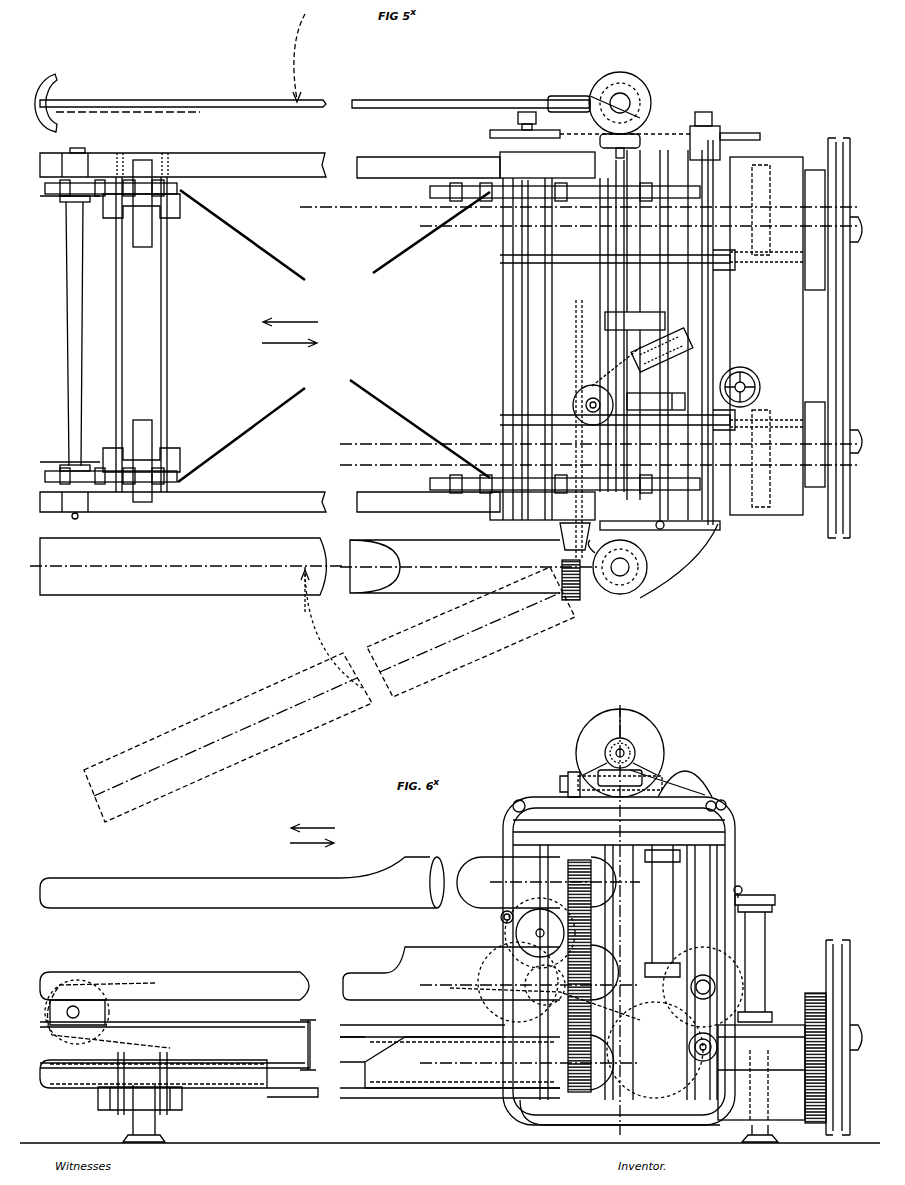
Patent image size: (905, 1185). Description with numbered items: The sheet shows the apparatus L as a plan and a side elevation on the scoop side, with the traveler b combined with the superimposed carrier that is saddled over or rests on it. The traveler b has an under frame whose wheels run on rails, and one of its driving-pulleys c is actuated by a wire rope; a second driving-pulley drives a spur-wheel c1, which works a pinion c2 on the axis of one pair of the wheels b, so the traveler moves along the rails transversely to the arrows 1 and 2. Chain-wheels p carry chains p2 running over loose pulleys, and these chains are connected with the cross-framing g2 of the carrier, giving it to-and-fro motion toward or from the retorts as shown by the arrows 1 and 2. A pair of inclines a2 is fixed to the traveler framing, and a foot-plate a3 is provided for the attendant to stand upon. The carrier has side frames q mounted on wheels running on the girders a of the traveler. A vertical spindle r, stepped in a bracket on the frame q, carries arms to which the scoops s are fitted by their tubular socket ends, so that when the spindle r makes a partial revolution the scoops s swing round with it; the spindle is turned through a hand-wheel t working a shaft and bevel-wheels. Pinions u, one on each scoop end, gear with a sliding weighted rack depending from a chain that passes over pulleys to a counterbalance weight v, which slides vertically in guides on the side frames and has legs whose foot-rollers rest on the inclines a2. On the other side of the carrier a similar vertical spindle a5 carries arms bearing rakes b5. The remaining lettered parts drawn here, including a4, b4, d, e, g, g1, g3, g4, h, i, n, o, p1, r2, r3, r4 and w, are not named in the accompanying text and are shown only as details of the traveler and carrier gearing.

In FIG. 5x, the girders a is at (346, 333).
In FIG. 6x, the girders a is at (422, 1070).
In FIG. 5x, the inclines a2 is at (584, 335).
In FIG. 5x, the foot-plate a3 is at (651, 336).
In FIG. 5x, the arm a4 is at (357, 174).
In FIG. 6x, the arm a4 is at (671, 783).
In FIG. 5x, the vertical spindle a5 is at (627, 136).
In FIG. 5x, the traveler b is at (415, 333).
In FIG. 6x, the traveler b is at (140, 1093).
In FIG. 5x, the rod b4 is at (128, 114).
In FIG. 5x, the rakes b5 is at (46, 103).
In FIG. 5x, the driving-pulley c is at (839, 338).
In FIG. 6x, the driving-pulley c is at (815, 1058).
In FIG. 5x, the spur-wheel c1 is at (859, 335).
In FIG. 5x, the pinion c2 is at (853, 384).
In FIG. 6x, the pinion c2 is at (844, 1037).
In FIG. 5x, the bearing d is at (815, 230).
In FIG. 5x, the bearing block e is at (814, 312).
In FIG. 6x, the frame g is at (619, 961).
In FIG. 5x, the wheel g1 is at (627, 115).
In FIG. 5x, the cross-framing g2 is at (565, 338).
In FIG. 6x, the cross-framing g2 is at (545, 960).
In FIG. 5x, the bracket g3 is at (586, 336).
In FIG. 5x, the lower wheel g4 is at (654, 559).
In FIG. 5x, the cam h is at (664, 350).
In FIG. 5x, the hand wheel i is at (740, 384).
In FIG. 5x, the block n is at (678, 401).
In FIG. 5x, the block o is at (656, 401).
In FIG. 6x, the chain-wheels p is at (107, 1014).
In FIG. 5x, the chain bar p1 is at (102, 333).
In FIG. 5x, the chains p2 is at (69, 333).
In FIG. 6x, the chains p2 is at (147, 976).
In FIG. 6x, the side frame q is at (675, 1016).
In FIG. 5x, the vertical spindle r is at (721, 332).
In FIG. 6x, the vertical spindle r is at (629, 1044).
In FIG. 5x, the bearing r2 is at (815, 444).
In FIG. 6x, the rack r3 is at (593, 974).
In FIG. 6x, the rack end r4 is at (600, 886).
In FIG. 5x, the scoops s is at (315, 680).
In FIG. 6x, the scoops s is at (340, 972).
In FIG. 6x, the hand-wheel t is at (754, 952).
In FIG. 5x, the pinions u is at (601, 450).
In FIG. 6x, the pinions u is at (611, 1087).
In FIG. 5x, the counterbalance weight v is at (696, 335).
In FIG. 6x, the counterbalance weight v is at (701, 842).
In FIG. 6x, the hand wheel w is at (612, 920).
In FIG. 6x, the apparatus L is at (453, 1133).
In FIG. 5x, the arrow 1 is at (290, 317).
In FIG. 6x, the arrow 1 is at (313, 822).
In FIG. 5x, the arrow 2 is at (289, 347).
In FIG. 6x, the arrow 2 is at (312, 847).